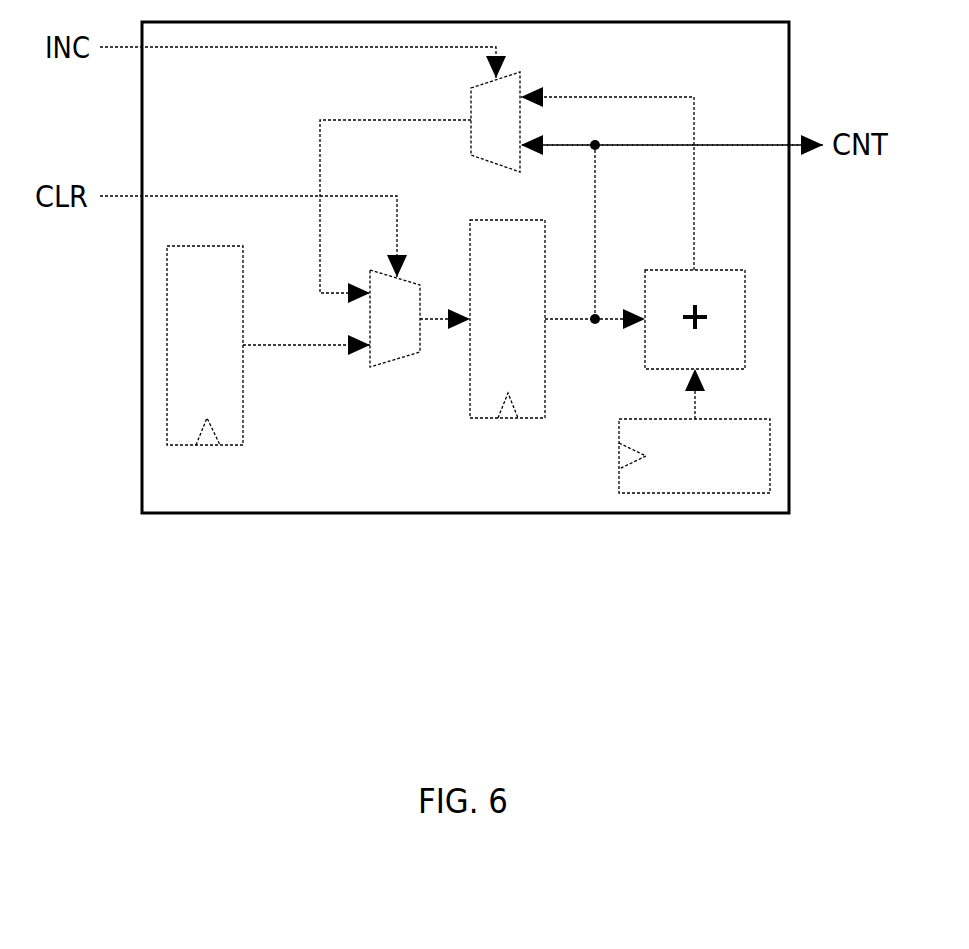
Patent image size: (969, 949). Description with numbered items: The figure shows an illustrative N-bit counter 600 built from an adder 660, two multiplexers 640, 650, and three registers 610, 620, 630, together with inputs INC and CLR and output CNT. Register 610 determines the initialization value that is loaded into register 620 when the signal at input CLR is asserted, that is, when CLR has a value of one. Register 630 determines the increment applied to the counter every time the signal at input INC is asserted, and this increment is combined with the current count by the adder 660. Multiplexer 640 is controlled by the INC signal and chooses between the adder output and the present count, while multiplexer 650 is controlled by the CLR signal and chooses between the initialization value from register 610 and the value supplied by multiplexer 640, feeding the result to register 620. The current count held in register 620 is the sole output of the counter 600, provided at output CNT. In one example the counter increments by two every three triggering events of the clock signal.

The counter 600 is at (777, 67).
The register 610 is at (244, 410).
The register 620 is at (546, 390).
The register 630 is at (617, 476).
The multiplexer 640 is at (470, 94).
The multiplexer 650 is at (398, 362).
The adder 660 is at (716, 270).